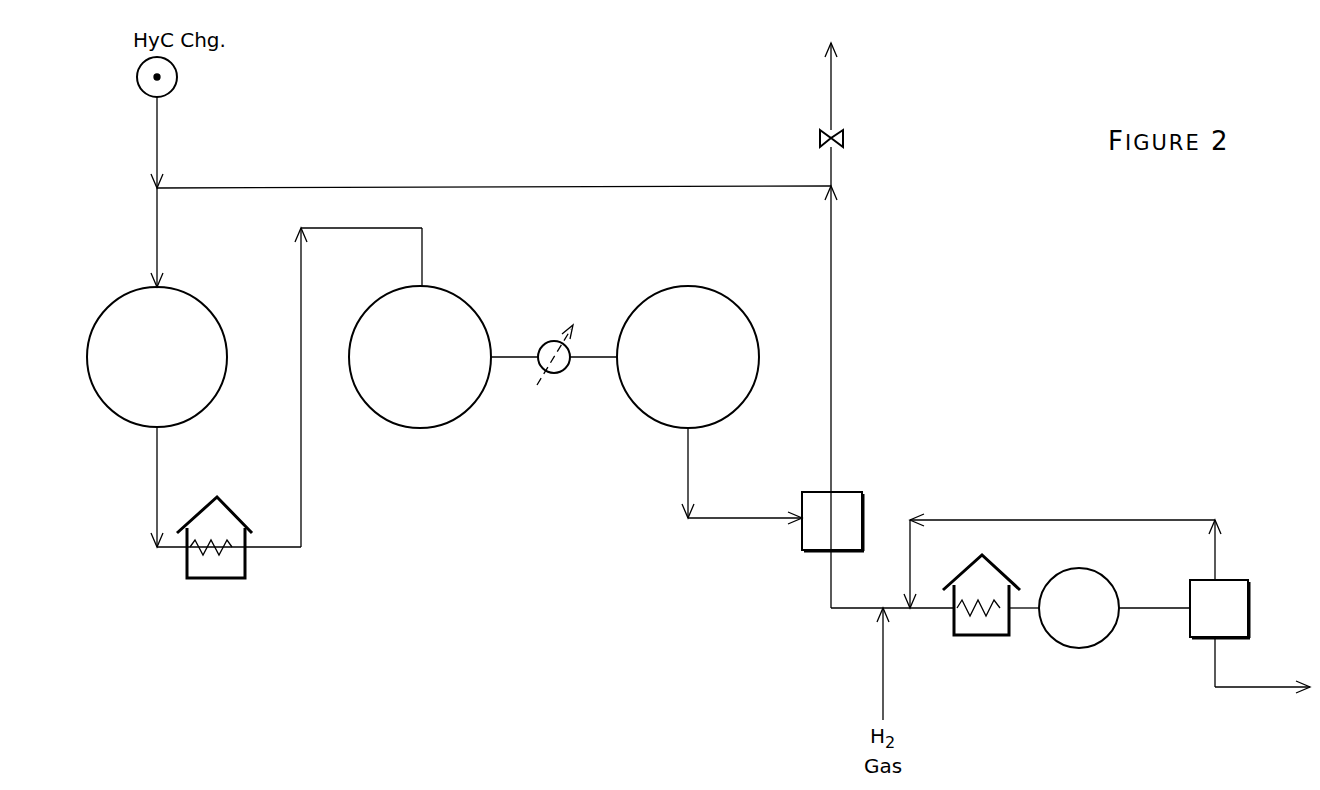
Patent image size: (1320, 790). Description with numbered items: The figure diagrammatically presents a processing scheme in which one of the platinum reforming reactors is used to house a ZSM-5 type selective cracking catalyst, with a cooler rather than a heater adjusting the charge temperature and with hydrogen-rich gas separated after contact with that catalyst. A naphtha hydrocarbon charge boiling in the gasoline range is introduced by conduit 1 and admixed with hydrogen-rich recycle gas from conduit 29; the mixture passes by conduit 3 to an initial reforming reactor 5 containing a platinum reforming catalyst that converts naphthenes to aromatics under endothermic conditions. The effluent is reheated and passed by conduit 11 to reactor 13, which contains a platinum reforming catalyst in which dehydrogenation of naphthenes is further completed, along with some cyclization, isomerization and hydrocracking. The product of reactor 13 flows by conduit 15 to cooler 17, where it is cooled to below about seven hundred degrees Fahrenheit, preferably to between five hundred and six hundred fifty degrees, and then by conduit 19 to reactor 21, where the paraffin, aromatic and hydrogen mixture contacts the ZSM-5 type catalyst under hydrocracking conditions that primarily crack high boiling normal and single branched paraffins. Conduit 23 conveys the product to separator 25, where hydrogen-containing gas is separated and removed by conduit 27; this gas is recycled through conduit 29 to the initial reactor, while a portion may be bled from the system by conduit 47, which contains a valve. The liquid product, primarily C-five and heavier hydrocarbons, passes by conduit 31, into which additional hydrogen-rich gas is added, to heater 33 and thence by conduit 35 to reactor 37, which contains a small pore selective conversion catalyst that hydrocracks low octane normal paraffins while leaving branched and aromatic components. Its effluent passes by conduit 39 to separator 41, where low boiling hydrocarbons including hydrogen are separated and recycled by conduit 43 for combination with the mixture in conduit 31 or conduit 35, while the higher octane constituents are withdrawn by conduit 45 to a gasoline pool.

The conduit 1 is at (155, 125).
The conduit 3 is at (155, 228).
The initial reforming reactor 5 is at (155, 497).
The conduit 11 is at (303, 493).
The reactor 13 is at (420, 357).
The conduit 15 is at (526, 362).
The cooler 17 is at (550, 340).
The conduit 19 is at (597, 362).
The reactor 21 is at (688, 357).
The conduit 23 is at (688, 522).
The separator 25 is at (833, 521).
The conduit 27 is at (835, 341).
The conduit 29 is at (540, 186).
The conduit 31 is at (832, 612).
The heater 33 is at (975, 638).
The conduit 35 is at (1027, 612).
The reactor 37 is at (1079, 650).
The conduit 39 is at (1155, 612).
The separator 41 is at (1220, 609).
The conduit 43 is at (1025, 518).
The conduit 45 is at (1257, 690).
The conduit 47 is at (834, 128).